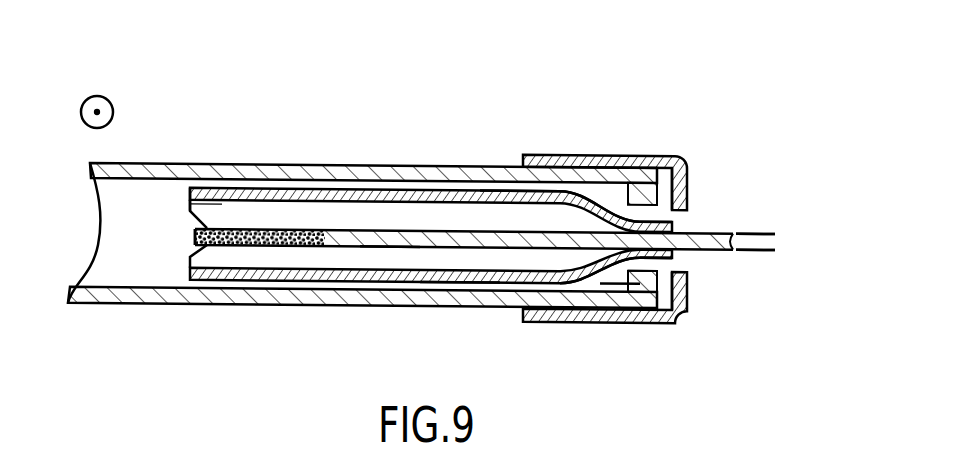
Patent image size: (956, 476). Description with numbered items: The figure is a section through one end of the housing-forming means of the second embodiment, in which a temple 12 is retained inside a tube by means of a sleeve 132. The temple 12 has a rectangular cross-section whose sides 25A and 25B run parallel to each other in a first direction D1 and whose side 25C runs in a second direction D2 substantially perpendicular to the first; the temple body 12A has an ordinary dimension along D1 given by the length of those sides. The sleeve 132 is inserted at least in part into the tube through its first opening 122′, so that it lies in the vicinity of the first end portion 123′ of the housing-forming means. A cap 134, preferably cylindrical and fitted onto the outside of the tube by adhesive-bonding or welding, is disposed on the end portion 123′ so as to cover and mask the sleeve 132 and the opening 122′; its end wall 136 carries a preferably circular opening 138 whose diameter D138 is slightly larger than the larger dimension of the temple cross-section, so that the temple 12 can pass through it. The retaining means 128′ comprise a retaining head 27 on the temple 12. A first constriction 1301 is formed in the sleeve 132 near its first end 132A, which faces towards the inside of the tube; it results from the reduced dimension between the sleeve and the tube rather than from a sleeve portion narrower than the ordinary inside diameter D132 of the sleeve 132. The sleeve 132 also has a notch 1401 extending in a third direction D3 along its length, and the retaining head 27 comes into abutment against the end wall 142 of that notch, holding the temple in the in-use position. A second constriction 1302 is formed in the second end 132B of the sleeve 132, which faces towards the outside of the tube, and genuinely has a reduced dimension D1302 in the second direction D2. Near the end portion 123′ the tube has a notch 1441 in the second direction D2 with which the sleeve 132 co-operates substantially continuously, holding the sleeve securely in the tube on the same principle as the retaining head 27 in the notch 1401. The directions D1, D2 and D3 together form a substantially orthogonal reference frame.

The retaining means 128′ is at (360, 127).
The first end of the sleeve 132A is at (211, 171).
The end wall of the notch 142 is at (327, 226).
The sleeve 132 is at (403, 185).
The ordinary inside diameter of the sleeve D132 is at (477, 267).
The side of the temple cross-section 25B is at (512, 190).
The second end of the sleeve 132B is at (623, 206).
The cap 134 is at (643, 155).
The end wall of the cap 136 is at (689, 187).
The reduced dimension of the second constriction D1302 is at (813, 273).
The diameter of the cap opening D138 is at (778, 212).
The notch 1401 is at (195, 231).
The first constriction 1301 is at (232, 250).
The retaining head 27 is at (290, 249).
The temple 12 is at (348, 250).
The temple body 12A is at (390, 250).
The side of the temple cross-section 25C is at (453, 285).
The side of the temple cross-section 25A is at (503, 285).
The first end portion of the housing-forming means 123′ is at (614, 288).
The notch of the tube 1441 is at (642, 280).
The first opening of the tube 122′ is at (677, 297).
The second constriction 1302 is at (667, 281).
The opening of the cap 138 is at (703, 269).
The first direction D1 is at (113, 106).
The second direction D2 is at (97, 96).
The third direction D3 is at (81, 111).